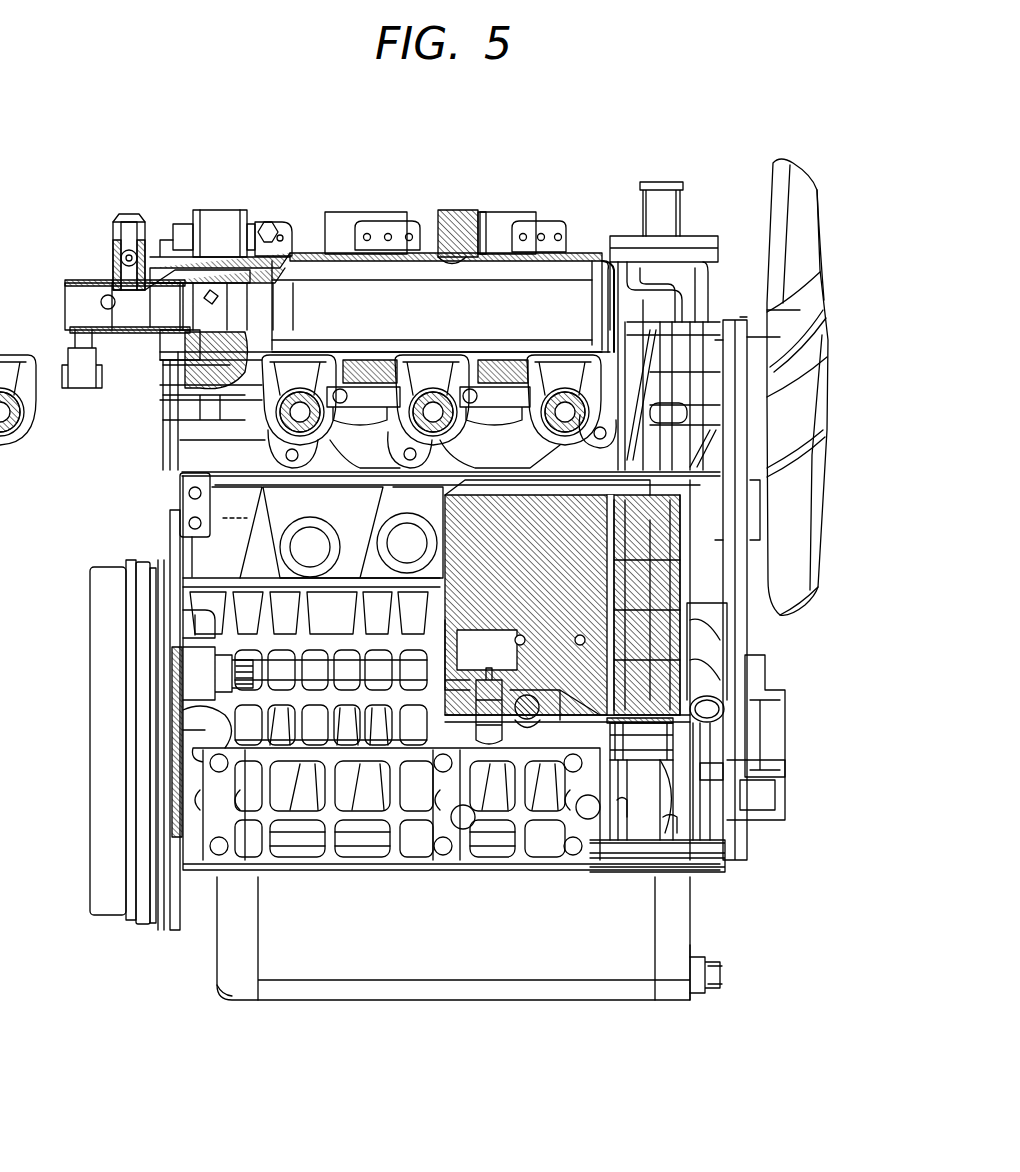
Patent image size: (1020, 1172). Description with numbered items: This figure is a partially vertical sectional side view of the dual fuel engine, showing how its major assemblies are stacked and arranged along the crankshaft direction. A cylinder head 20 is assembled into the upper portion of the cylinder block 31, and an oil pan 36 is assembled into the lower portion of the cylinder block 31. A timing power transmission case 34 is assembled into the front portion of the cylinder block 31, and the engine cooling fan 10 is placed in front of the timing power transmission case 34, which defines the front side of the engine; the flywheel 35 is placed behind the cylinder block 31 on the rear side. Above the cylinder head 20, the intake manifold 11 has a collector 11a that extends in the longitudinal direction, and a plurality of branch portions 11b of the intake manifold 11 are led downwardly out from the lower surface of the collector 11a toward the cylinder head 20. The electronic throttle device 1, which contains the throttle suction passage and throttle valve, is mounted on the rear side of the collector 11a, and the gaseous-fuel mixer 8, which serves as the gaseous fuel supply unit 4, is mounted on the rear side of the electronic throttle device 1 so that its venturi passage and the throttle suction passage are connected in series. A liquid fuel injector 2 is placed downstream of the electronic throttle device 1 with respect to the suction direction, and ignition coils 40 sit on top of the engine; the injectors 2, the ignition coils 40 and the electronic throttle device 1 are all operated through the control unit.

The electronic throttle device 1 is at (168, 358).
The liquid fuel injector 2 is at (310, 432).
The gaseous fuel supply unit 4 is at (112, 268).
The gaseous-fuel mixer 8 is at (156, 329).
The engine cooling fan 10 is at (797, 583).
The intake manifold 11 is at (572, 250).
The collector 11a is at (595, 262).
The branch portions 11b is at (300, 372).
The cylinder head 20 is at (500, 450).
The cylinder block 31 is at (170, 528).
The timing power transmission case 34 is at (712, 828).
The flywheel 35 is at (106, 612).
The oil pan 36 is at (680, 915).
The ignition coils 40 is at (226, 222).